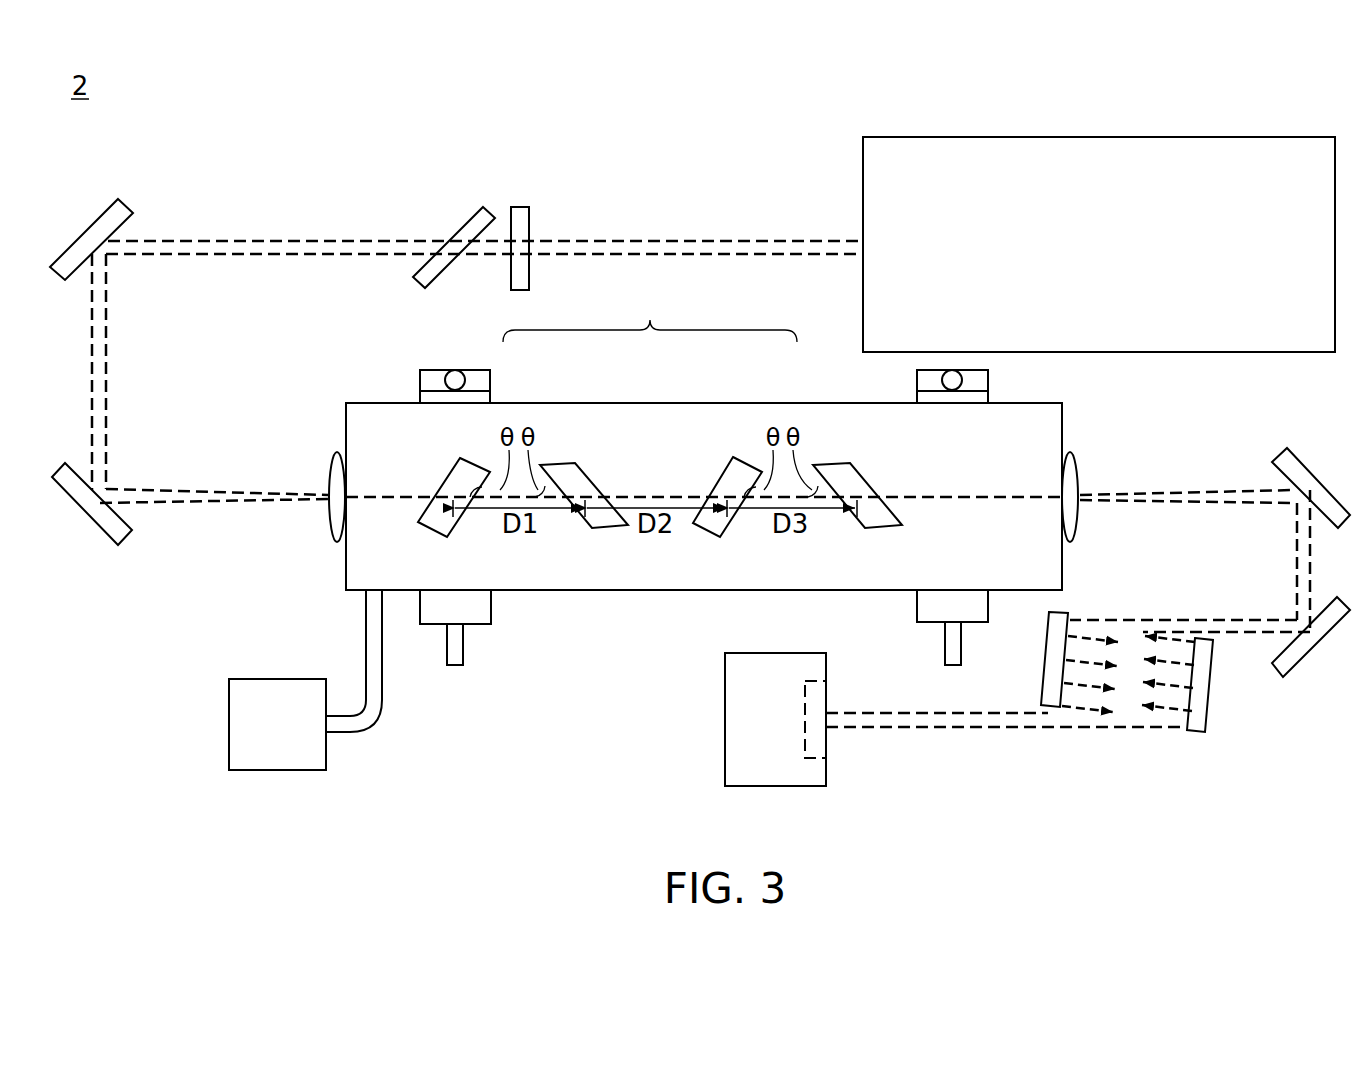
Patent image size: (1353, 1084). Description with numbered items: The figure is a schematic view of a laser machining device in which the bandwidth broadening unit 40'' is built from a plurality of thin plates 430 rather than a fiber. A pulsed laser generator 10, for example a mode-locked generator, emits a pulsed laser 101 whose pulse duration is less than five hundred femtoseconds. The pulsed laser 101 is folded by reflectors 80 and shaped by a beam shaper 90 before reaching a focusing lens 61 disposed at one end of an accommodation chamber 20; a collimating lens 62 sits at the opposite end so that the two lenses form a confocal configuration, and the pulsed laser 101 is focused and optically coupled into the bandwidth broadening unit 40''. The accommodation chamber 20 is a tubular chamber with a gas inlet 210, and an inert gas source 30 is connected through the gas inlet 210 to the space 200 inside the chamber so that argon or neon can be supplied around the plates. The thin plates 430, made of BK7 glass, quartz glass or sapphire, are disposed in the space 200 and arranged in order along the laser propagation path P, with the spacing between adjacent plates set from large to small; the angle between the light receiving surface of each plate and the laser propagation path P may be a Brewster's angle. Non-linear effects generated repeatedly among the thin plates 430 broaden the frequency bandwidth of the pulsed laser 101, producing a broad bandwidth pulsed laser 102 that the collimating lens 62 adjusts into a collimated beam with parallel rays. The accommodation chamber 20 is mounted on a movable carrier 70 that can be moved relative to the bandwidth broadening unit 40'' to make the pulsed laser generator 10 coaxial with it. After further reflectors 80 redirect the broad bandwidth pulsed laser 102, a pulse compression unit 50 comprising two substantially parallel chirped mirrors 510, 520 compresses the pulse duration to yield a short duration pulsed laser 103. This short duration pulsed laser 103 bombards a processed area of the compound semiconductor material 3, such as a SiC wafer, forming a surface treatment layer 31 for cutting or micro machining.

The compound semiconductor material 3 is at (725, 718).
The pulsed laser generator 10 is at (1098, 137).
The accommodation chamber 20 is at (372, 403).
The inert gas source 30 is at (278, 679).
The surface treatment layer 31 is at (810, 760).
The bandwidth broadening unit 40'' is at (650, 315).
The pulse compression unit 50 is at (1118, 735).
The focusing lens 61 is at (330, 515).
The collimating lens 62 is at (1080, 470).
The movable carrier 70 is at (455, 370).
The reflector 80 is at (92, 230).
The beam shaper 90 is at (520, 207).
The pulsed laser 101 is at (684, 238).
The broad bandwidth pulsed laser 102 is at (1184, 490).
The short duration pulsed laser 103 is at (930, 732).
The space 200 is at (563, 562).
The gas inlet 210 is at (375, 598).
The thin plate 430 is at (488, 470).
The chirped mirror 510 is at (1050, 708).
The chirped mirror 520 is at (1178, 719).
The laser propagation path P is at (390, 495).